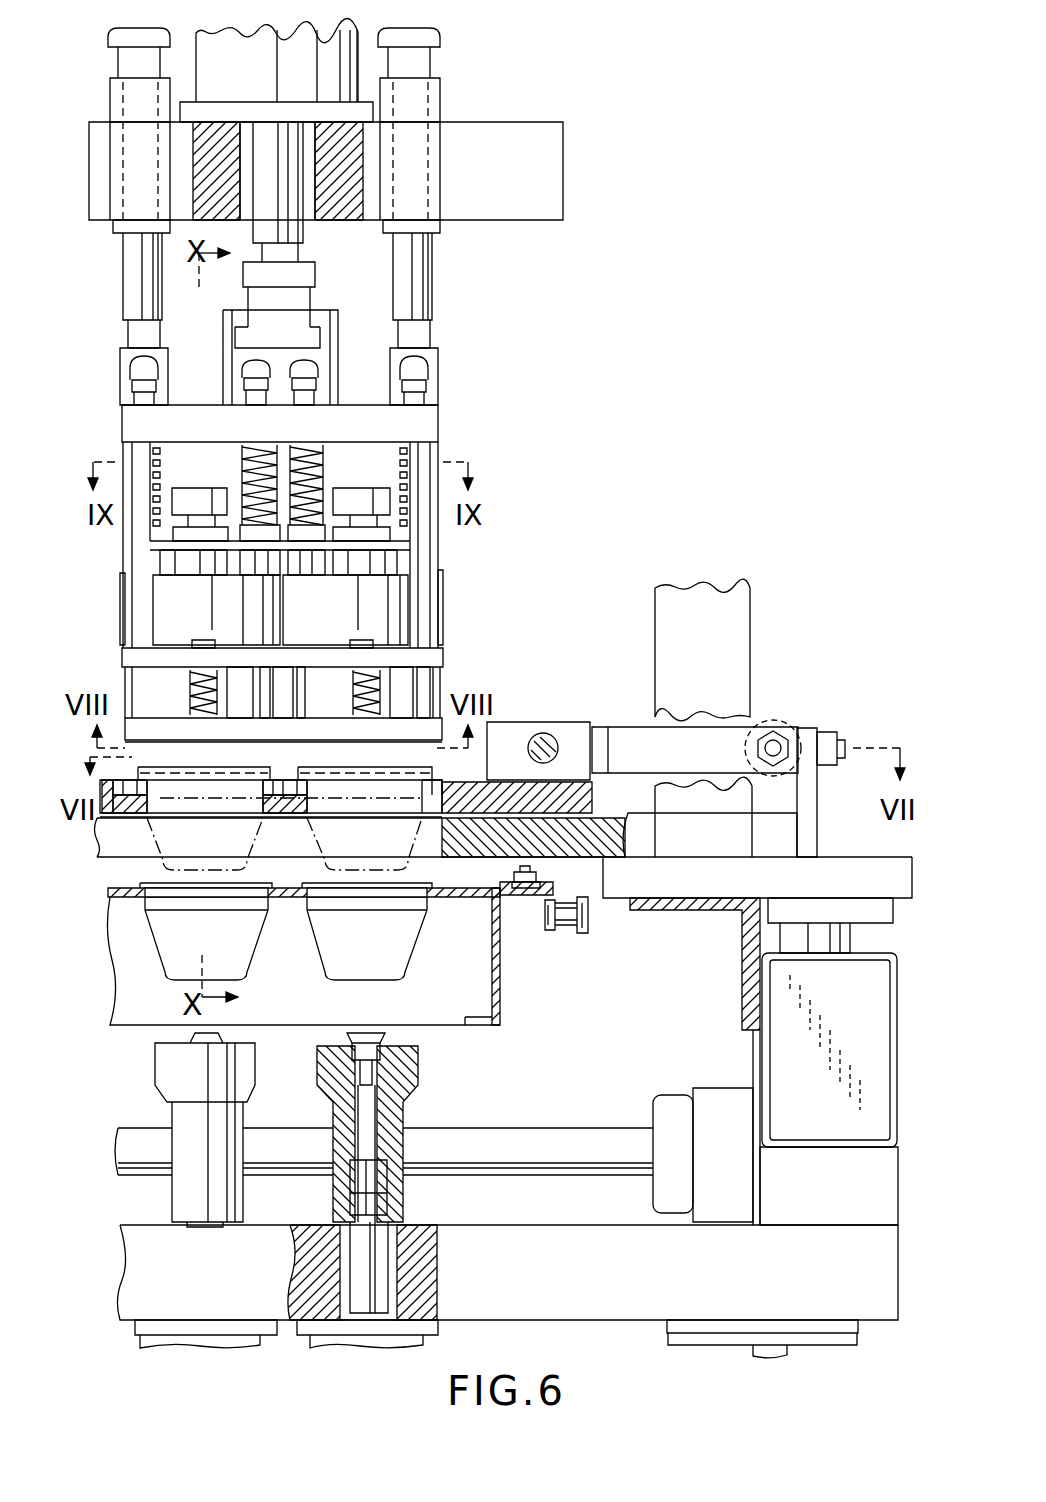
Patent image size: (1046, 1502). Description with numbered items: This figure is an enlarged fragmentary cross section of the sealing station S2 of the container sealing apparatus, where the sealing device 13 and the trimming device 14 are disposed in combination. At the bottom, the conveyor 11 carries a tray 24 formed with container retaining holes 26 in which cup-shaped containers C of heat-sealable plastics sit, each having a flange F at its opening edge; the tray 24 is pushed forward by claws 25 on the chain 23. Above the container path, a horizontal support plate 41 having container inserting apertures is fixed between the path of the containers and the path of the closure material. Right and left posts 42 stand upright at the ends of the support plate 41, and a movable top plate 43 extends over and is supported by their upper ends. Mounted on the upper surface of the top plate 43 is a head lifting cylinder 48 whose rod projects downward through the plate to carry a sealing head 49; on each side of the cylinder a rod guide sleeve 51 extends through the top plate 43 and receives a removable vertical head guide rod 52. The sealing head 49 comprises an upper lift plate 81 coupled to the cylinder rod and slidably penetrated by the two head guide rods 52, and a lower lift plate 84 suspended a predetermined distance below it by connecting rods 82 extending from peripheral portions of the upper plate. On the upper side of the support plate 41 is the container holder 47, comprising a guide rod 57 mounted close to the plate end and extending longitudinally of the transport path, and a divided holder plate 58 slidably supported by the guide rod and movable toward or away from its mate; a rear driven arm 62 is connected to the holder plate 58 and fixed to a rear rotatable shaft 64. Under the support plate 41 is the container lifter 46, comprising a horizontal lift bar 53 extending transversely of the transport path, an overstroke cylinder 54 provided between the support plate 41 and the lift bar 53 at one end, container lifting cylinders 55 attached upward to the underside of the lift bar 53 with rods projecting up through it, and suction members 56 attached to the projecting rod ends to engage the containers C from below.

The head lifting cylinder 48 is at (254, 87).
The rod guide sleeve 51 is at (443, 103).
The movable top plate 43 is at (520, 208).
The head guide rod 52 is at (137, 300).
The upper lift plate 81 is at (427, 423).
The connecting rod 82 is at (123, 558).
The lower lift plate 84 is at (125, 661).
The sealing head 49 is at (324, 592).
The sealing device 13 is at (445, 597).
The trimming device 14 is at (445, 637).
The container holder 47 is at (548, 692).
The guide rod 57 is at (552, 734).
The divided holder plate 58 is at (568, 793).
The post 42 is at (745, 632).
The rear driven arm 62 is at (817, 830).
The support plate 41 is at (640, 848).
The container retaining hole 26 is at (354, 989).
The claw 25 is at (522, 887).
The conveyor 11 is at (590, 938).
The chain 23 is at (567, 938).
The tray 24 is at (500, 1013).
The container lifter 46 is at (434, 1141).
The rear rotatable shaft 64 is at (582, 1155).
The suction member 56 is at (393, 1115).
The lift bar 53 is at (495, 1243).
The container lifting cylinder 55 is at (427, 1322).
The overstroke cylinder 54 is at (840, 1126).
The sealing station S2 is at (588, 380).
The flange F is at (312, 915).
The container C is at (408, 958).